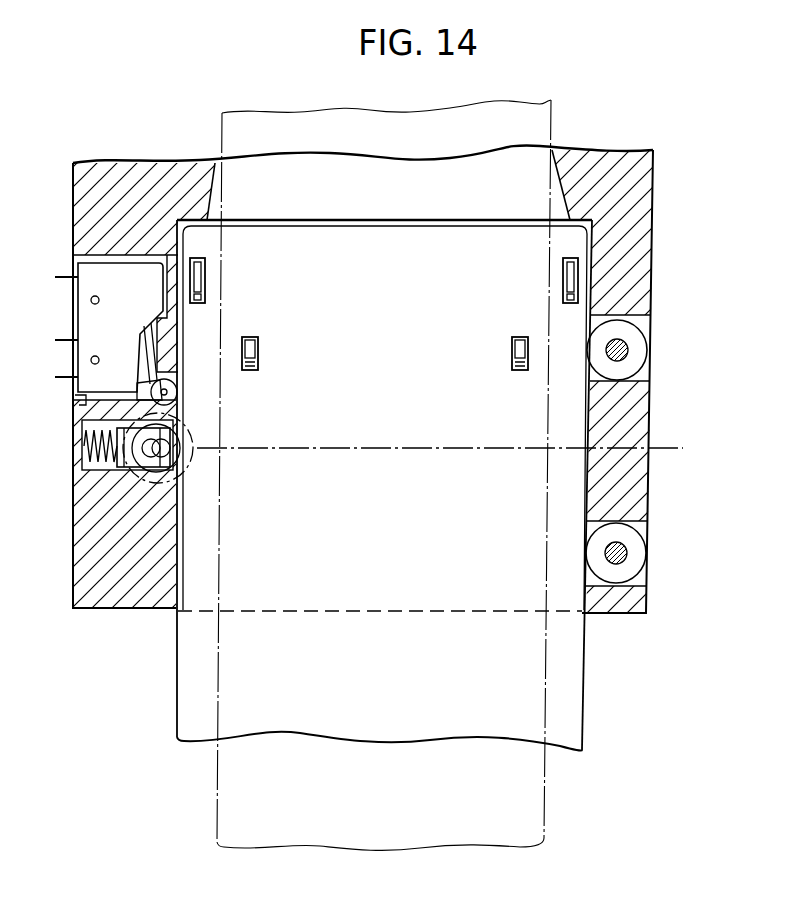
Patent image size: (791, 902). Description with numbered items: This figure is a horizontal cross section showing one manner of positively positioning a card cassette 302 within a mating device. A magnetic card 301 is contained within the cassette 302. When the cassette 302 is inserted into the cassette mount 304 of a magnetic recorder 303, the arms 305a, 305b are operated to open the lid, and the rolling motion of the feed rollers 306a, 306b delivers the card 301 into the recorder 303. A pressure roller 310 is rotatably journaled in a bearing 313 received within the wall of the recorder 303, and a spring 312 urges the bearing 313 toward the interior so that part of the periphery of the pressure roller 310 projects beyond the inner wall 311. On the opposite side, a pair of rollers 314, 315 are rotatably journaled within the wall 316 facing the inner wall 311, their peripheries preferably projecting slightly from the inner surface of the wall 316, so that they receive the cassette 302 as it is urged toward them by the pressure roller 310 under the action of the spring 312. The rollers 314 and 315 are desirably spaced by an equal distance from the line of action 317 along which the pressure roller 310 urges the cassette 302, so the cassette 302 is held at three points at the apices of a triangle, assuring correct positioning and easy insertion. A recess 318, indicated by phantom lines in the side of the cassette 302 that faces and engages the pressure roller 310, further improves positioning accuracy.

The magnetic card 301 is at (232, 793).
The card cassette 302 is at (238, 718).
The magnetic recorder 303 is at (110, 609).
The cassette mount 304 is at (169, 619).
The arm 305a is at (203, 297).
The arm 305b is at (565, 297).
The feed roller 306a is at (253, 352).
The feed roller 306b is at (516, 360).
The pressure roller 310 is at (178, 414).
The inner wall 311 is at (182, 512).
The spring 312 is at (86, 436).
The bearing 313 is at (112, 470).
The roller 314 is at (637, 352).
The roller 315 is at (636, 556).
The wall 316 is at (580, 486).
The line of action 317 is at (465, 450).
The recess 318 is at (196, 441).